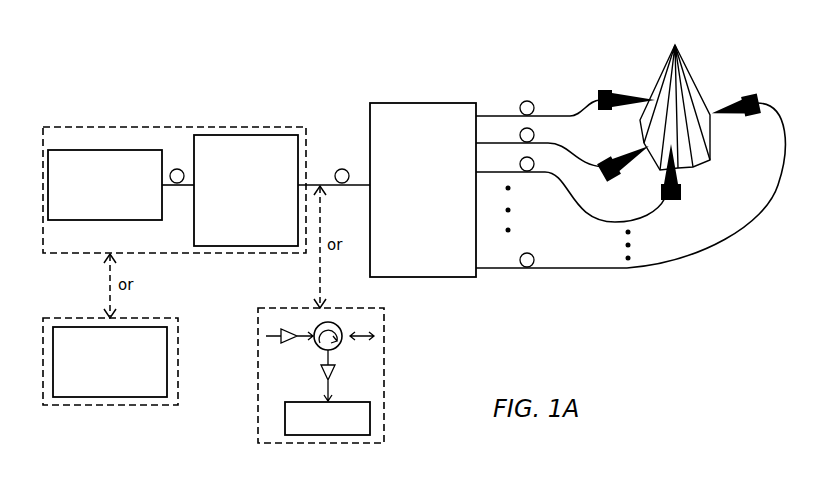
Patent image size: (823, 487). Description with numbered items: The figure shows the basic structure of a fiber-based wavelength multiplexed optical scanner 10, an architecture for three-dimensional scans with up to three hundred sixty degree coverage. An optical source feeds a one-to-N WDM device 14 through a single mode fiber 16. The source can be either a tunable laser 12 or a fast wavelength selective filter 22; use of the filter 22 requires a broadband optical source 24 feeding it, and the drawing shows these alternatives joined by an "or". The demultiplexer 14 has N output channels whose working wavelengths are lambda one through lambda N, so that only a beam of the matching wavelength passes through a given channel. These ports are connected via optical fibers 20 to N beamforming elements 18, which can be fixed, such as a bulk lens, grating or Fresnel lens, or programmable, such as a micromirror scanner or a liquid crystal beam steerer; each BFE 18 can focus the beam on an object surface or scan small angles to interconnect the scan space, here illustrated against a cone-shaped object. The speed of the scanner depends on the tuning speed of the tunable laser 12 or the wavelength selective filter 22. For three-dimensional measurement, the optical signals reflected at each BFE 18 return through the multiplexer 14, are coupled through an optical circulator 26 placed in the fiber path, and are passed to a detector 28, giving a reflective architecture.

The optical sensing system 10 is at (416, 44).
The tunable laser 12 is at (110, 397).
The 1:N WDM device 14 is at (423, 277).
The single mode fiber 16 is at (362, 182).
The beamforming element 18 is at (607, 158).
The optical fiber 20 is at (573, 104).
The wavelength selective filter 22 is at (245, 135).
The broadband optical source 24 is at (83, 150).
The optical circulator 26 is at (342, 347).
The detector 28 is at (327, 435).